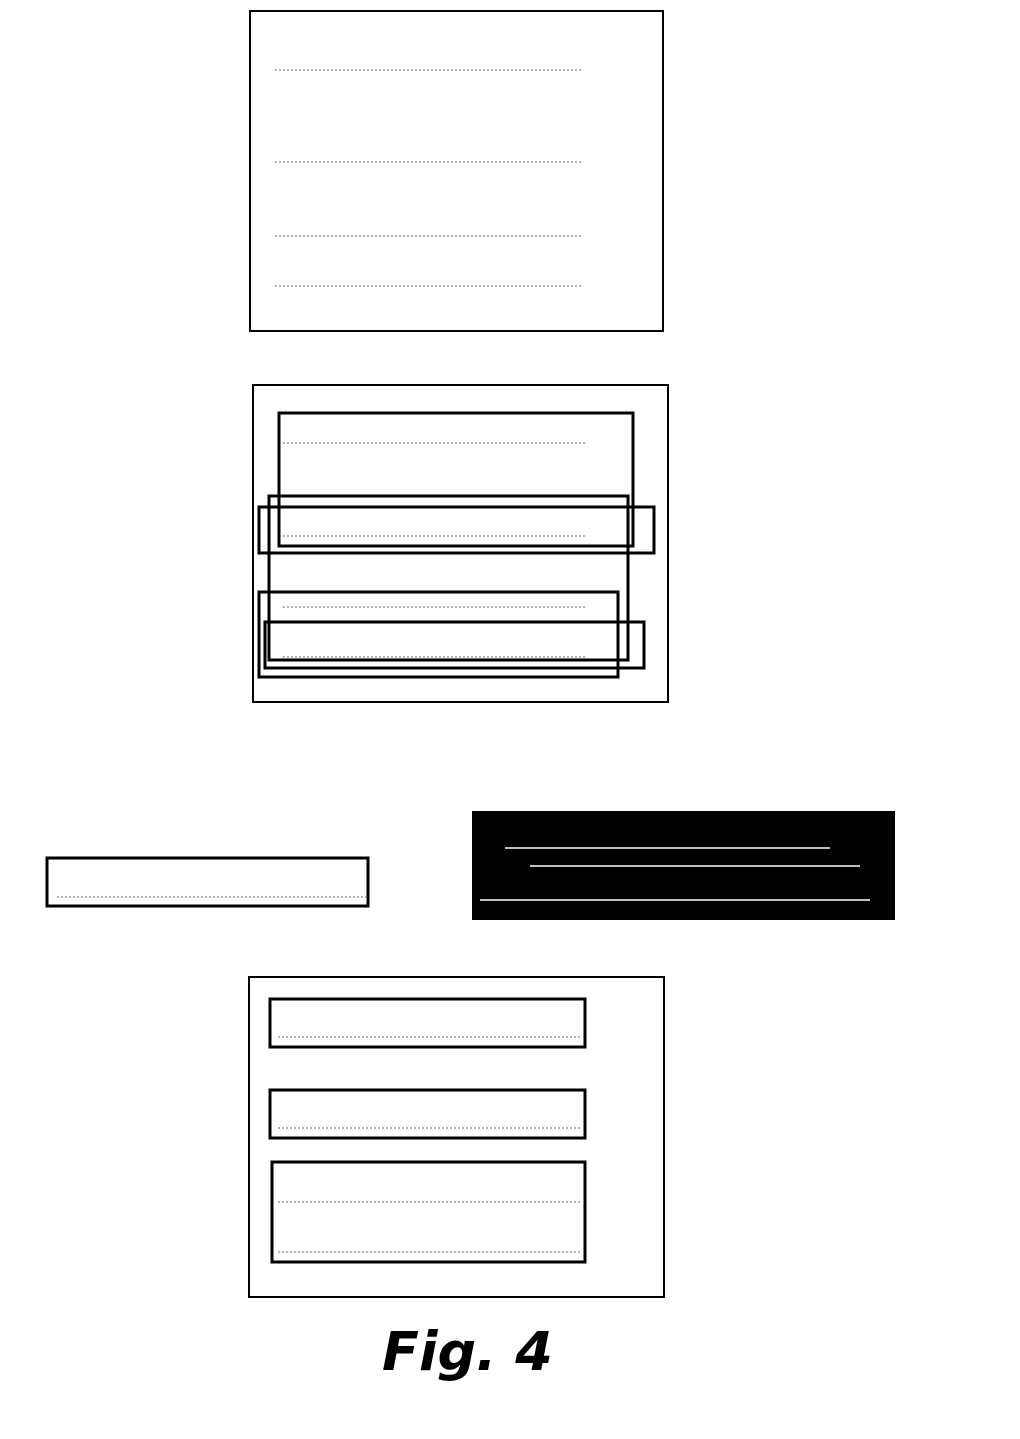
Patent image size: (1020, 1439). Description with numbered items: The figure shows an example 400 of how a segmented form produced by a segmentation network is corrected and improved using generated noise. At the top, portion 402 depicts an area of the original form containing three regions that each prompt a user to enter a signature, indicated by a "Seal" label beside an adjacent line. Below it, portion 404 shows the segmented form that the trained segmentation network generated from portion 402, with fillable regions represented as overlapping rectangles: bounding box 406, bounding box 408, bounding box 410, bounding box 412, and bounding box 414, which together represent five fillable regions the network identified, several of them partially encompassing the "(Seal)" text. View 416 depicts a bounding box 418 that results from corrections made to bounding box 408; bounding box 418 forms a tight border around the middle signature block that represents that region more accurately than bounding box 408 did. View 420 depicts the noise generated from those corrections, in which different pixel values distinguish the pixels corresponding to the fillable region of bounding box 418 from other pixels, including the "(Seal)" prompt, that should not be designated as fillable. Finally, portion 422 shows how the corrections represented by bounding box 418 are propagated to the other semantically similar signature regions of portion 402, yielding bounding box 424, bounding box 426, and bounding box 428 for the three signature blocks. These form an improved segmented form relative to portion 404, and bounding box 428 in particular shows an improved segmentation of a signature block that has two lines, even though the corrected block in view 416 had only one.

The example 400 is at (126, 80).
The portion 402 is at (664, 140).
The portion 404 is at (253, 420).
The bounding box 406 is at (458, 413).
The bounding box 408 is at (655, 530).
The bounding box 410 is at (268, 580).
The bounding box 412 is at (645, 645).
The bounding box 414 is at (258, 665).
The view 416 is at (210, 793).
The bounding box 418 is at (215, 858).
The view 420 is at (645, 793).
The portion 422 is at (664, 1085).
The bounding box 424 is at (270, 1022).
The bounding box 426 is at (270, 1110).
The bounding box 428 is at (272, 1205).